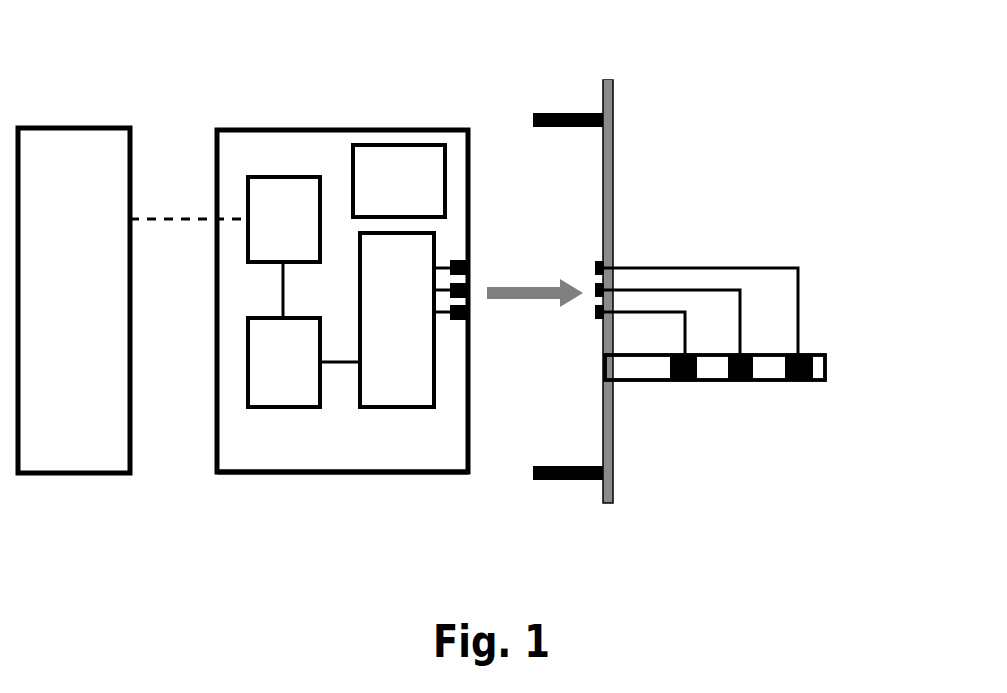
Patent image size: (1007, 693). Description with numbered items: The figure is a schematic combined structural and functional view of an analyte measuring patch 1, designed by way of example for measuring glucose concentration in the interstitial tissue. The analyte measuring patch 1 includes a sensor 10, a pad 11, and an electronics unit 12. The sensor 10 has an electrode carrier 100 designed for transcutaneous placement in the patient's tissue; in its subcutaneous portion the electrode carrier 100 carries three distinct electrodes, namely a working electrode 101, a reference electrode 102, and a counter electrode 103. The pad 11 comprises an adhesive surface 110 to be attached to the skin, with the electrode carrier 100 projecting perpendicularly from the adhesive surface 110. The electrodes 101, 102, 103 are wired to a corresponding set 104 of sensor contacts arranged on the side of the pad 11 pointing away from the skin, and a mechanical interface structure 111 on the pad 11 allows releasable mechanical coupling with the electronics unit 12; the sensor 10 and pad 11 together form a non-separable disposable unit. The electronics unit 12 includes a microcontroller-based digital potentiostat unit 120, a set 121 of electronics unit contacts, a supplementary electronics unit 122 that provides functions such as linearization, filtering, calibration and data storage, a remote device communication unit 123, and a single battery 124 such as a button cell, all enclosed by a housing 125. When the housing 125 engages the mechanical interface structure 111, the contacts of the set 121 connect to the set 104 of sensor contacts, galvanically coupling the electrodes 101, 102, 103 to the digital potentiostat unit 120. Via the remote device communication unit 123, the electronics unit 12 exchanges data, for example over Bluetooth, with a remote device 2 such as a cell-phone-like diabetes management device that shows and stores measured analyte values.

The analyte measuring patch 1 is at (797, 81).
The remote device 2 is at (64, 319).
The sensor 10 is at (831, 314).
The pad 11 is at (610, 85).
The adhesive surface 110 is at (613, 180).
The mechanical interface structure 111 is at (570, 112).
The electronics unit 12 is at (264, 458).
The digital potentiostat unit 120 is at (371, 329).
The set of electronics unit contacts 121 is at (477, 290).
The supplementary electronics unit 122 is at (257, 383).
The remote device communication unit 123 is at (257, 239).
The battery 124 is at (372, 204).
The housing 125 is at (383, 472).
The electrode carrier 100 is at (627, 370).
The working electrode 101 is at (800, 380).
The reference electrode 102 is at (743, 380).
The counter electrode 103 is at (683, 380).
The set of sensor contacts 104 is at (589, 285).